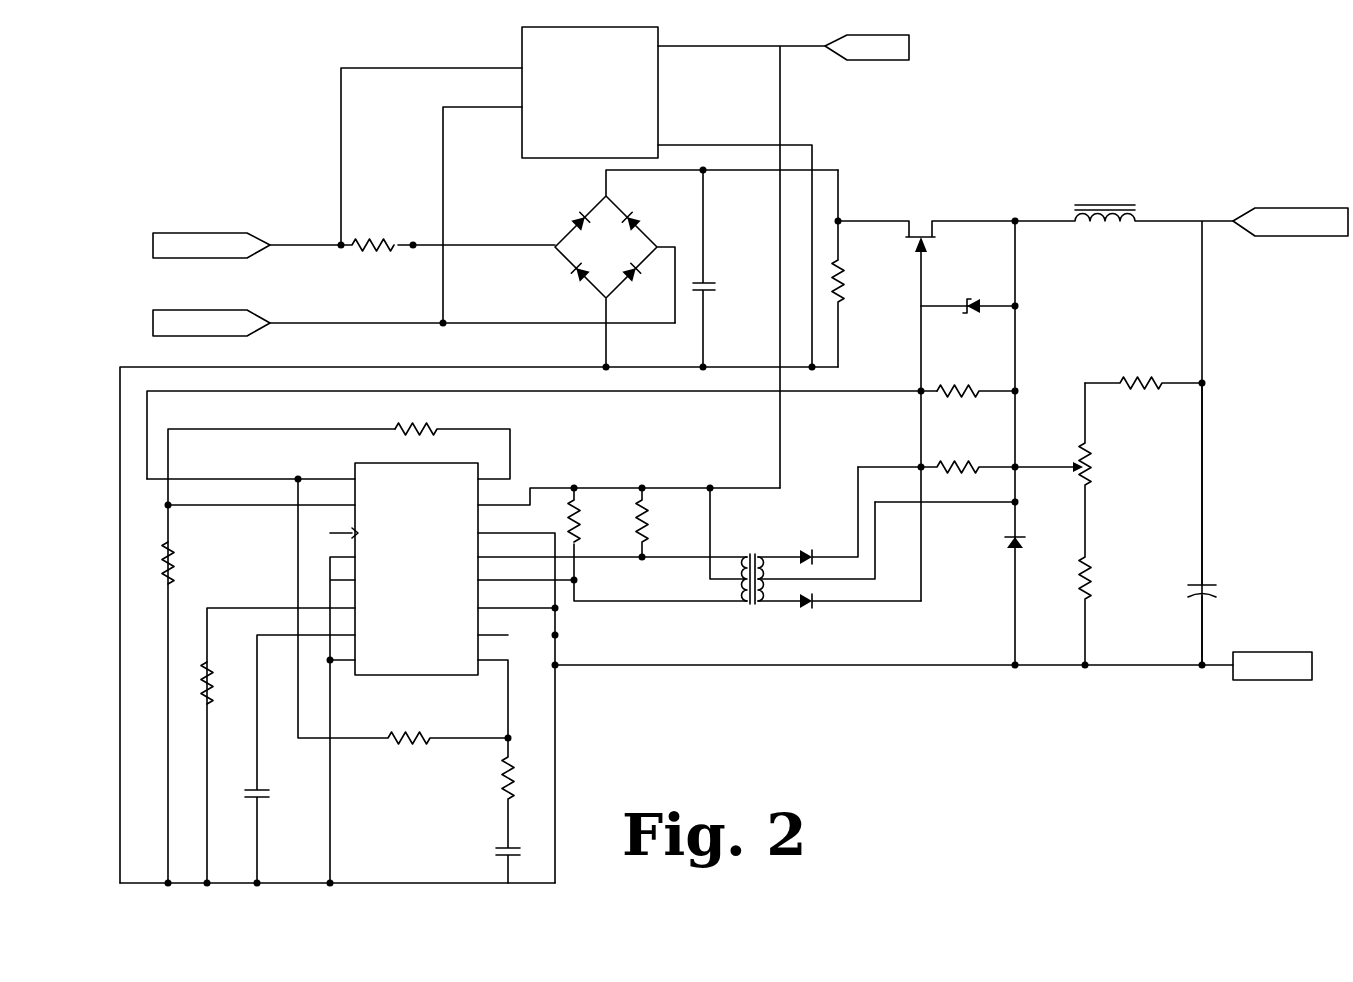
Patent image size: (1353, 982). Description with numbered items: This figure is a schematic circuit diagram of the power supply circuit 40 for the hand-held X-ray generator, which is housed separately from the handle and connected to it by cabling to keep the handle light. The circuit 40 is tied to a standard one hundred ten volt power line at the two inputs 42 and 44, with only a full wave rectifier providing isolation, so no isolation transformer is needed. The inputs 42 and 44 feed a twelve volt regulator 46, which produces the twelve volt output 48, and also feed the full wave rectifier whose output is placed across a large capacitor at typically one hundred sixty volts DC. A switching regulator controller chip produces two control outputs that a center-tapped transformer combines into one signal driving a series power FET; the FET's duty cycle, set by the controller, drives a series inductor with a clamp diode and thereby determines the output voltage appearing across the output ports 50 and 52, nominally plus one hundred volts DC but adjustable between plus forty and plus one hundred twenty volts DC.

The power supply circuit 40 is at (1062, 106).
The power line input 42 is at (173, 232).
The power line input 44 is at (173, 309).
The 12 volt regulator 46 is at (658, 81).
The 12 volt output 48 is at (909, 47).
The output port 50 is at (1333, 208).
The output port 52 is at (1293, 652).